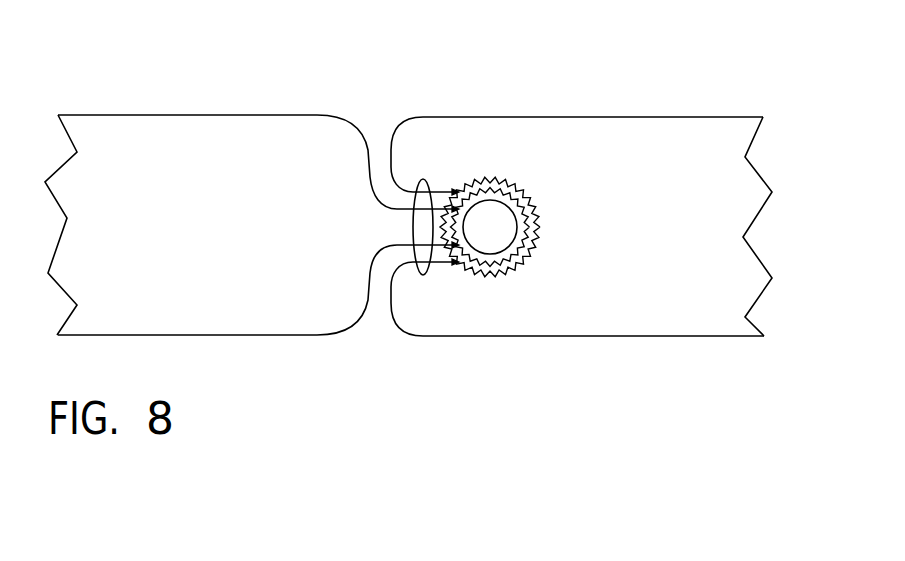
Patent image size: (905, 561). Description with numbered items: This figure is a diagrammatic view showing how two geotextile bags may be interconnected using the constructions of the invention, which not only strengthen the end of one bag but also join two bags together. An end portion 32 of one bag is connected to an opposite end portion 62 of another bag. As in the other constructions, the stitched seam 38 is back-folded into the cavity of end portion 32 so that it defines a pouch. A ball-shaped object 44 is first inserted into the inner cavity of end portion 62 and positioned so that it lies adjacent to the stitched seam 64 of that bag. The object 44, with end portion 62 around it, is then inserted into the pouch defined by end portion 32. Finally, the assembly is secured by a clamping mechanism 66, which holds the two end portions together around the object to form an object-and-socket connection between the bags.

The end portion 32 is at (603, 104).
The opposite end portion 62 is at (208, 98).
The clamping mechanism 66 is at (418, 178).
The stitched seam 38 is at (533, 212).
The stitched seam 64 is at (517, 263).
The ball-shaped object 44 is at (492, 224).